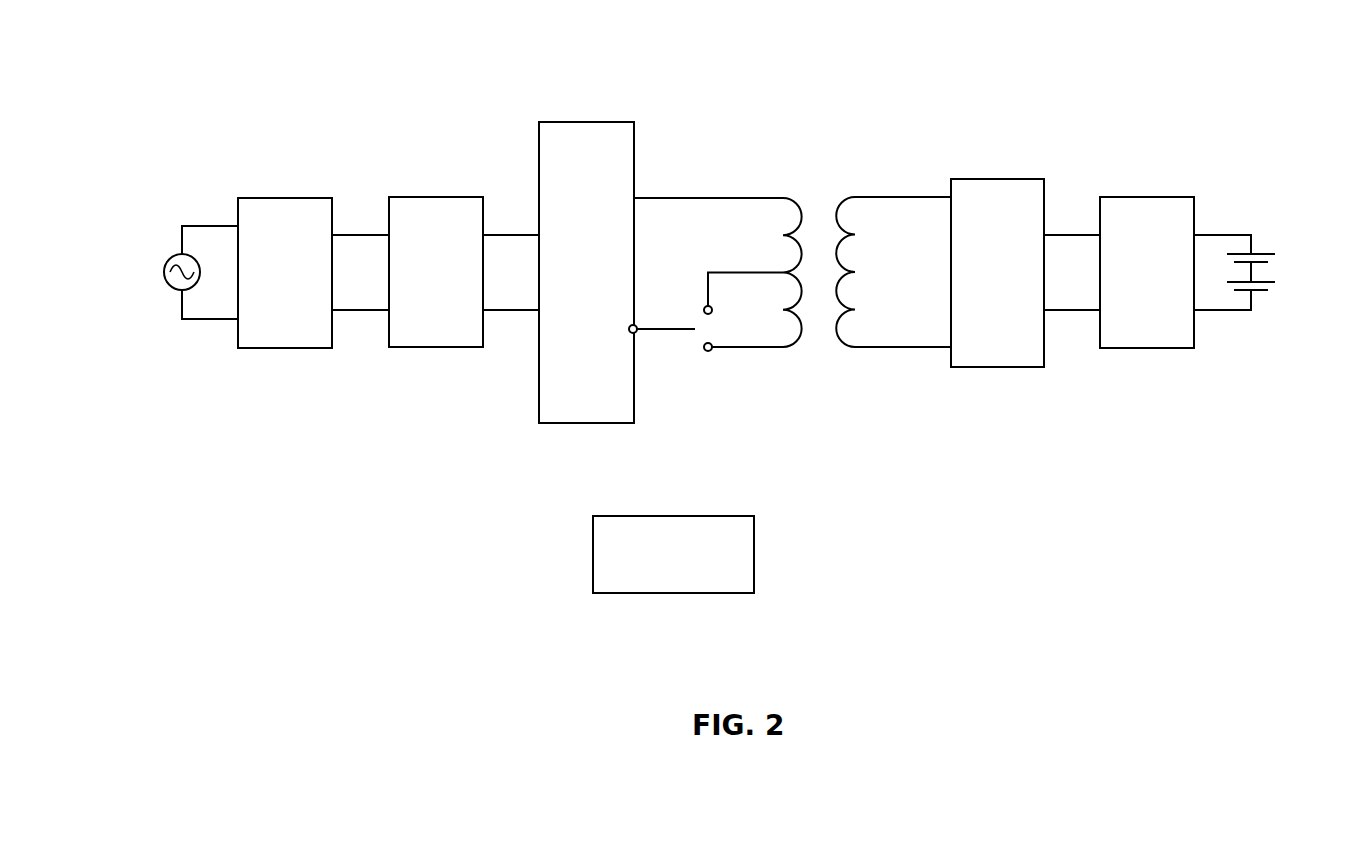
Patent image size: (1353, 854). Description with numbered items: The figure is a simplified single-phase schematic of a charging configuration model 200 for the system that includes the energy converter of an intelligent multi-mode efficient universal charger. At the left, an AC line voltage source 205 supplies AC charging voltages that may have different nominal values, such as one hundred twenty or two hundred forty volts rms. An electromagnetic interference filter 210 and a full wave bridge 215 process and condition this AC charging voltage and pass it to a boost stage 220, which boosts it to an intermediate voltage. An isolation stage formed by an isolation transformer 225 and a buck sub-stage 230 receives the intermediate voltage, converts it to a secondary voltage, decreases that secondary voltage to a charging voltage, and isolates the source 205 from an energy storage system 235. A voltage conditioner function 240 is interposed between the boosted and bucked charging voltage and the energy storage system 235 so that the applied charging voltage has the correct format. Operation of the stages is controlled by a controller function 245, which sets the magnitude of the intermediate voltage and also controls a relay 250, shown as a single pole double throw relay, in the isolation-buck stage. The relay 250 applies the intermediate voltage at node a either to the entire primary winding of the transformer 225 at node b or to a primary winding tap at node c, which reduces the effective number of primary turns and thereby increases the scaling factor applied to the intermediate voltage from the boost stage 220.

The charging configuration model 200 is at (252, 107).
The AC line voltage source 205 is at (163, 245).
The electromagnetic interference (EMI) filter 210 is at (313, 273).
The full wave bridge (FWB) 215 is at (464, 272).
The boost stage 220 is at (661, 272).
The isolation transformer 225 is at (893, 197).
The buck sub-stage 230 is at (1025, 273).
The energy storage system (ESS) 235 is at (1273, 240).
The voltage conditioner function 240 is at (1175, 272).
The controller function 245 is at (673, 554).
The relay 250 is at (698, 318).